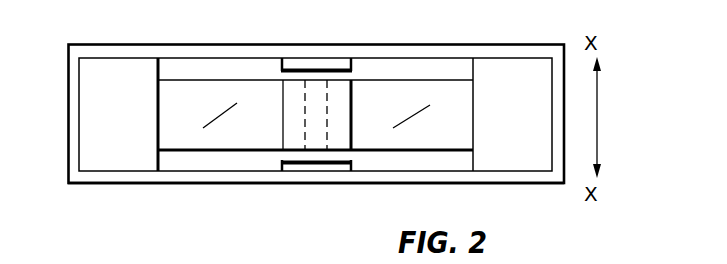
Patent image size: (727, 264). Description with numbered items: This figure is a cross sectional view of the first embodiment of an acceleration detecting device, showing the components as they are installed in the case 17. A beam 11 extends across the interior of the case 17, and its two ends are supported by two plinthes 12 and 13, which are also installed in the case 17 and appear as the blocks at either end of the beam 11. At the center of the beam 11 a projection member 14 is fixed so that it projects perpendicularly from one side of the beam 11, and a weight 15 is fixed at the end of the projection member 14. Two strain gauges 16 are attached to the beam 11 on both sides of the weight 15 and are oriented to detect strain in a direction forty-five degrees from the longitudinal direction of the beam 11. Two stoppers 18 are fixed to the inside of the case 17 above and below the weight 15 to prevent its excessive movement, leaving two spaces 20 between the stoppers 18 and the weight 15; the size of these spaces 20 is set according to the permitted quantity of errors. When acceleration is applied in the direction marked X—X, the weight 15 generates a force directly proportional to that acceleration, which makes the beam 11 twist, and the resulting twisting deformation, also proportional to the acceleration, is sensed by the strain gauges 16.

The beam 11 is at (203, 83).
The plinth 12 is at (107, 63).
The plinth 13 is at (528, 68).
The projection member 14 is at (311, 112).
The weight 15 is at (340, 98).
The strain gauge 16 is at (222, 113).
The case 17 is at (367, 178).
The stopper 18 is at (330, 64).
The space 20 is at (305, 75).